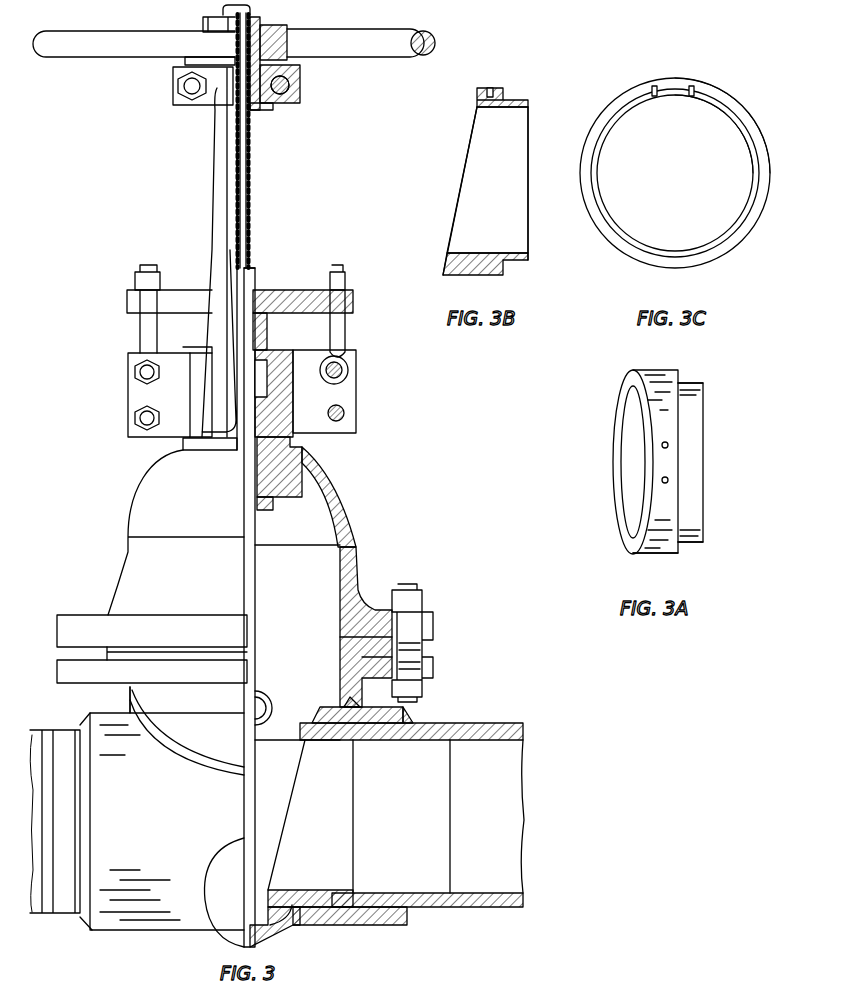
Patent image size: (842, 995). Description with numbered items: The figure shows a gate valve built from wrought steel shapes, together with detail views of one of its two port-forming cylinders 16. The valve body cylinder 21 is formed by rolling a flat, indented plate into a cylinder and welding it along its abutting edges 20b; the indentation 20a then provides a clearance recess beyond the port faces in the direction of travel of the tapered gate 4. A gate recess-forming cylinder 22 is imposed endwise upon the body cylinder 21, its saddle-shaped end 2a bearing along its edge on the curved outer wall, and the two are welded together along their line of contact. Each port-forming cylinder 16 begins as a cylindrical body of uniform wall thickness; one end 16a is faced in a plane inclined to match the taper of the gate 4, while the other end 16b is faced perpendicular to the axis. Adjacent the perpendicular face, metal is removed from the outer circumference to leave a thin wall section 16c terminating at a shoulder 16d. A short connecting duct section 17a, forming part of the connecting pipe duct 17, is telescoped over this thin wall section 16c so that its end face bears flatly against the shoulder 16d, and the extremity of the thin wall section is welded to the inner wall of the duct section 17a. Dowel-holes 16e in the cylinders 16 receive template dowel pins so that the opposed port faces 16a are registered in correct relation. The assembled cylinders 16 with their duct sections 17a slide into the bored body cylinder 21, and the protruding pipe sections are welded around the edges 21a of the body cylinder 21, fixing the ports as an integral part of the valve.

In FIG. 3, the end of imposed cylinder 2a is at (350, 700).
In FIG. 3, the tapered gate 4 is at (266, 863).
In FIG. 3, the port-forming cylinder 16 is at (386, 831).
In FIG. 3B, the port-forming cylinder 16 is at (491, 165).
In FIG. 3C, the port-forming cylinder 16 is at (691, 157).
In FIG. 3A, the port-forming cylinder 16 is at (652, 459).
In FIG. 3, the inclined end face 16a is at (300, 760).
In FIG. 3B, the inclined end face 16a is at (470, 134).
In FIG. 3A, the inclined end face 16a is at (620, 402).
In FIG. 3, the perpendicular end face 16b is at (355, 768).
In FIG. 3B, the perpendicular end face 16b is at (531, 138).
In FIG. 3A, the perpendicular end face 16b is at (705, 495).
In FIG. 3, the thin wall section 16c is at (340, 890).
In FIG. 3B, the thin wall section 16c is at (515, 100).
In FIG. 3C, the thin wall section 16c is at (750, 205).
In FIG. 3A, the thin wall section 16c is at (690, 385).
In FIG. 3, the shoulder 16d is at (340, 915).
In FIG. 3B, the shoulder 16d is at (505, 268).
In FIG. 3C, the shoulder 16d is at (753, 132).
In FIG. 3A, the shoulder 16d is at (680, 548).
In FIG. 3B, the dowel-holes 16e is at (490, 87).
In FIG. 3C, the dowel-holes 16e is at (652, 88).
In FIG. 3A, the dowel-holes 16e is at (668, 447).
In FIG. 3, the connecting pipe duct 17 is at (45, 932).
In FIG. 3, the short connecting duct section 17a is at (427, 823).
In FIG. 3, the indentation 20a is at (165, 770).
In FIG. 3, the abutting edges 20b is at (128, 700).
In FIG. 3, the body cylinder 21 is at (167, 808).
In FIG. 3, the edges of body cylinder 21a is at (83, 925).
In FIG. 3, the gate recess-forming cylinder 22 is at (210, 406).